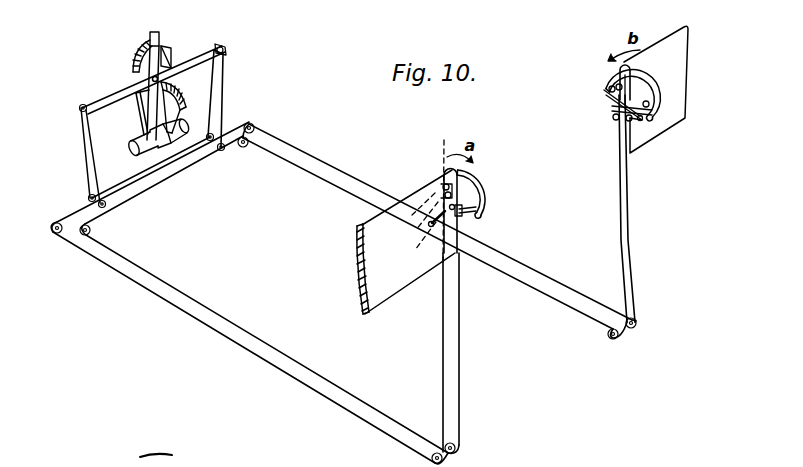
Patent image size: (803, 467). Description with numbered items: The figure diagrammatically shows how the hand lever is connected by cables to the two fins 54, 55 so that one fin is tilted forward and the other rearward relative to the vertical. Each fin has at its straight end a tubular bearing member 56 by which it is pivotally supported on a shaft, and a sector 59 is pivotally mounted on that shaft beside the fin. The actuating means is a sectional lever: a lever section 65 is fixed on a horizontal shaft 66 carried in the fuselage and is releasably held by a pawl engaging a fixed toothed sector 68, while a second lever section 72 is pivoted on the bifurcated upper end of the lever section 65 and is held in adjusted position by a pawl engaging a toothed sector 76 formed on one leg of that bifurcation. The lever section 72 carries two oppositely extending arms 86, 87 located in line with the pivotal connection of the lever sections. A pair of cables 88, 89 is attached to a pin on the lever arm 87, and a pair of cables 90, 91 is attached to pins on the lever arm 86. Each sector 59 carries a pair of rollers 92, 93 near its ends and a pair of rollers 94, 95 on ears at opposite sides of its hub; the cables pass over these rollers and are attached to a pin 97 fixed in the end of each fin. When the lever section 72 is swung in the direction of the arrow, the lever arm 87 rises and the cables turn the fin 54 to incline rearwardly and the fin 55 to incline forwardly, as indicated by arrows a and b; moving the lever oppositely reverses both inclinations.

The fin 54 is at (356, 272).
The fin 55 is at (668, 65).
The tubular bearing member 56 is at (437, 210).
The sector 59 is at (462, 190).
The lever section 65 is at (146, 126).
The horizontal shaft 66 is at (148, 160).
The toothed sector 68 is at (178, 98).
The lever section 72 is at (161, 35).
The toothed sector 76 is at (140, 33).
The lever arm 86 is at (115, 92).
The lever arm 87 is at (223, 58).
The cable 88 is at (228, 112).
The cable 89 is at (228, 100).
The cable 90 is at (90, 147).
The cable 91 is at (96, 175).
The roller 92 is at (482, 199).
The roller 93 is at (432, 180).
The roller 94 is at (462, 218).
The roller 95 is at (637, 117).
The pin 97 is at (612, 84).